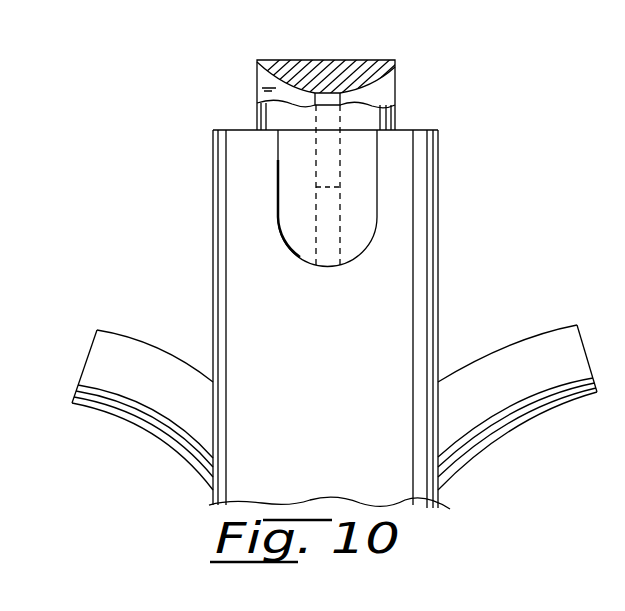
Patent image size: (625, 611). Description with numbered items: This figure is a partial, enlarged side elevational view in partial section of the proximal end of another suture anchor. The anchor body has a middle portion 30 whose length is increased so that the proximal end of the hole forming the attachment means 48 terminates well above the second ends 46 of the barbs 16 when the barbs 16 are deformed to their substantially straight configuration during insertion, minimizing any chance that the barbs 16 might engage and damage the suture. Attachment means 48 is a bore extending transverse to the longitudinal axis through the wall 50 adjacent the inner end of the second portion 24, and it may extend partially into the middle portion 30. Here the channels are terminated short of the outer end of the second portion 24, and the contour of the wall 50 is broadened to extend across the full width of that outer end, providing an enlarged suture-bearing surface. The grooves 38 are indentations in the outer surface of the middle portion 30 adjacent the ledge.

The barbs 16 is at (142, 423).
The second portion 24 is at (403, 79).
The middle portion 30 is at (441, 282).
The grooves 38 is at (367, 192).
The second end 46 is at (90, 352).
The attachment means 48 is at (330, 157).
The wall 50 is at (333, 72).